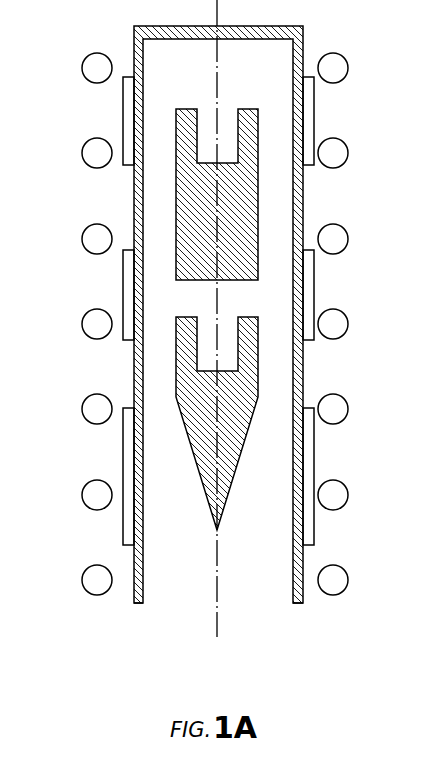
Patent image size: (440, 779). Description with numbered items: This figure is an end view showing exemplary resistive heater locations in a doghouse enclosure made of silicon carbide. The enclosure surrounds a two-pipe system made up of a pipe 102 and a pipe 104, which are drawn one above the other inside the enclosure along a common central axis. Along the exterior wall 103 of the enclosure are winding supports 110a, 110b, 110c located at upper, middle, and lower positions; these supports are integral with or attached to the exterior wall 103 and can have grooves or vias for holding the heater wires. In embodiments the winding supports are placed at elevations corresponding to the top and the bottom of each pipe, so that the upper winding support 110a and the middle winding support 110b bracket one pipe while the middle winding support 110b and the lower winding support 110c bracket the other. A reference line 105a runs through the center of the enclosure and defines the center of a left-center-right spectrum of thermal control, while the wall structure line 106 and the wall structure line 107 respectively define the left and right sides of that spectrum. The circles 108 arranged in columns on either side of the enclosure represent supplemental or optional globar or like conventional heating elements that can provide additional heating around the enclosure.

The pipe of two-pipe system 102 is at (243, 399).
The exterior wall 103 is at (302, 50).
The pipe of two-pipe system 104 is at (252, 208).
The reference line 105a is at (217, 615).
The wall structure line 106 is at (138, 603).
The wall structure line 107 is at (298, 603).
The circles representing heating elements 108 is at (98, 235).
The upper winding support 110a is at (314, 132).
The middle winding support 110b is at (314, 306).
The lower winding support 110c is at (314, 472).